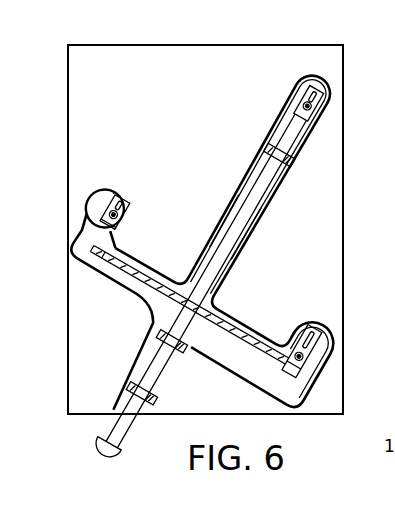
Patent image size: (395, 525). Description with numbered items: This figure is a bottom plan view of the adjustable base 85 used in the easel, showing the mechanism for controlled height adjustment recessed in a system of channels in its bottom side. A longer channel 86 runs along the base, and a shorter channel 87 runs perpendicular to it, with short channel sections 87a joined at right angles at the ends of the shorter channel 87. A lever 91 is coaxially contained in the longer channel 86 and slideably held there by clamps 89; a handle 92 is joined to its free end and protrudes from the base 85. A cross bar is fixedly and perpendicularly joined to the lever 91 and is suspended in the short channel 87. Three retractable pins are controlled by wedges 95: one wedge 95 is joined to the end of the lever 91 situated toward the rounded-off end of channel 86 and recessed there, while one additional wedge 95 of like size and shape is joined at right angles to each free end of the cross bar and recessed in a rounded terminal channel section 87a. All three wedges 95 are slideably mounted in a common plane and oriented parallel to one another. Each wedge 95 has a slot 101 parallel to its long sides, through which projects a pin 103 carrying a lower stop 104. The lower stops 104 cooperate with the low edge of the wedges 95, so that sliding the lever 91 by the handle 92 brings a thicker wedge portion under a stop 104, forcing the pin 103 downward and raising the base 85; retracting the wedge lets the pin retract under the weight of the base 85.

The base 85 is at (246, 45).
The longer channel 86 is at (237, 280).
The shorter channel 87 is at (143, 259).
The short channel sections 87a is at (121, 197).
The clamps 89 is at (293, 161).
The lever 91 is at (265, 204).
The handle / cross bar 92 is at (117, 268).
The wedges 95 is at (117, 190).
The slot 101 is at (132, 208).
The pins 103 is at (97, 200).
The lower stops 104 is at (102, 227).